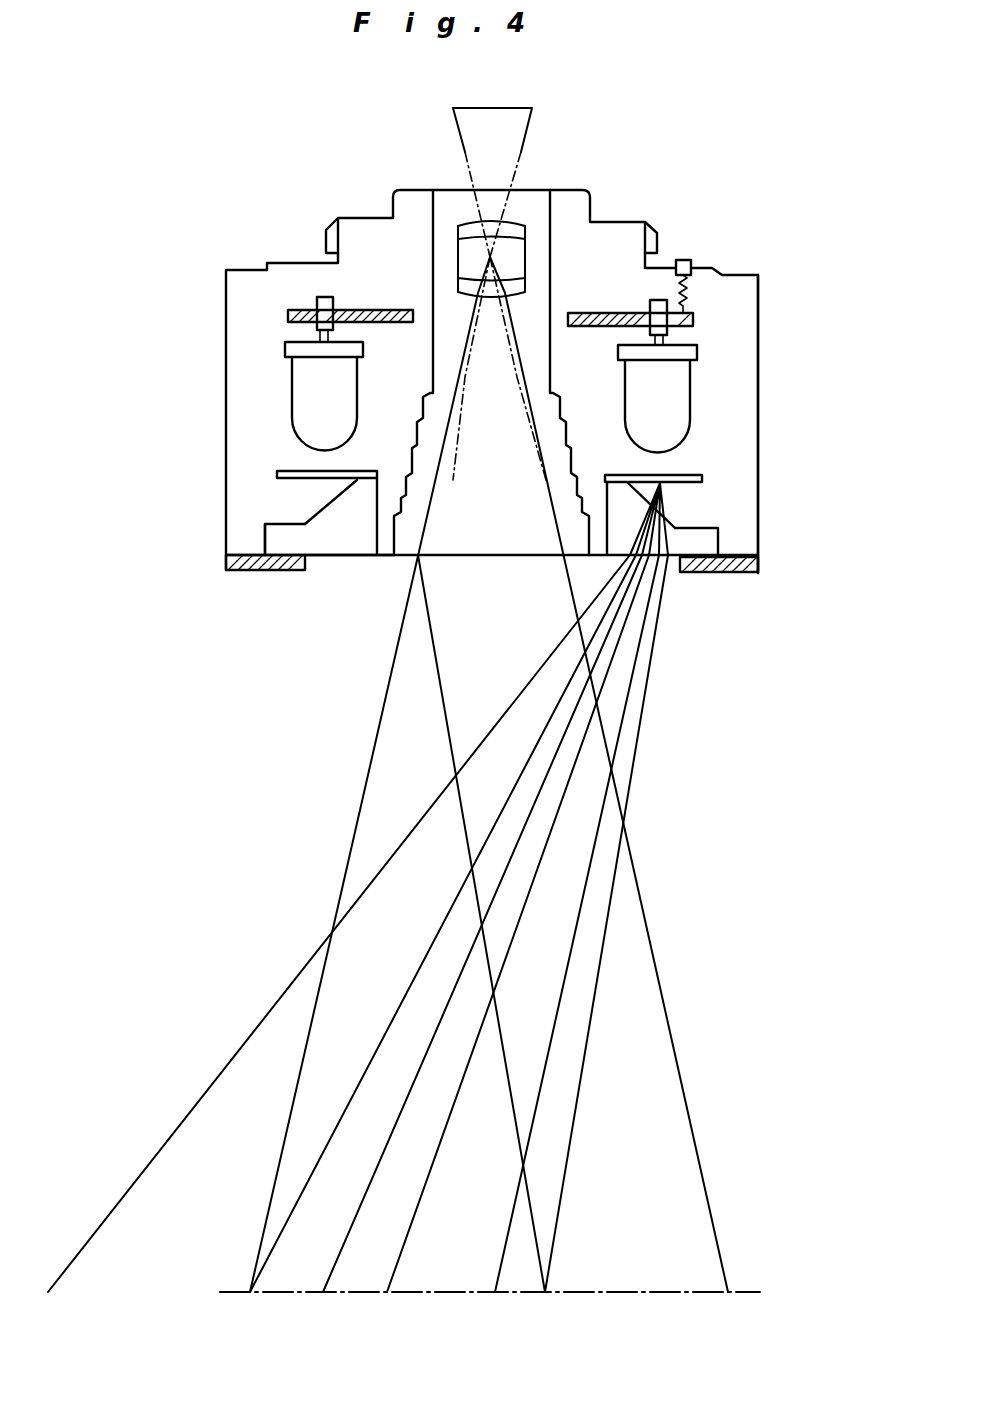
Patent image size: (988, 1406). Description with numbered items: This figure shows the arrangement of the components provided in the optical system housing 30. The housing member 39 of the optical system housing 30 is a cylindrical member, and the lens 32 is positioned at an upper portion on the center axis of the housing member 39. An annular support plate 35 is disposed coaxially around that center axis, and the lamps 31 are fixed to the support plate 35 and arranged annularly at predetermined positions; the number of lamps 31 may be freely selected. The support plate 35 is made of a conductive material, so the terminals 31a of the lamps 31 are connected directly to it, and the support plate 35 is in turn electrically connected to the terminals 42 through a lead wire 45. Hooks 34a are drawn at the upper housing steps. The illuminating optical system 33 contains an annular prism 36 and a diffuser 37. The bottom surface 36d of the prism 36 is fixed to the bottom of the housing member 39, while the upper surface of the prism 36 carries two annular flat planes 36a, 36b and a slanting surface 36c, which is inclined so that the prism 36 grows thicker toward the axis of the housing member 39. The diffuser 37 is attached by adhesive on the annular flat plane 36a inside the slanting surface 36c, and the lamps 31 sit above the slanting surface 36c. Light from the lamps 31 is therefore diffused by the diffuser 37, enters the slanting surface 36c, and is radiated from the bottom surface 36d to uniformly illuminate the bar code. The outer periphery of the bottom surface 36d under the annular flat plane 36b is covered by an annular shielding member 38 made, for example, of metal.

The optical system housing 30 is at (222, 400).
The lamps 31 is at (297, 387).
The terminals of the lamps 31a is at (322, 300).
The lens 32 is at (528, 243).
The illuminating optical system 33 is at (248, 527).
The engaging hook 34a is at (326, 235).
The annular support plate 35 is at (380, 310).
The annular prism 36 is at (318, 560).
The annular flat plane 36a is at (367, 470).
The annular flat plane 36b is at (282, 527).
The slanting surface 36c is at (322, 502).
The bottom surface of the prism 36d is at (350, 557).
The diffuser 37 is at (287, 472).
The annular shielding member 38 is at (718, 573).
The housing member 39 is at (758, 447).
The terminals 42 is at (686, 260).
The lead wire 45 is at (688, 293).